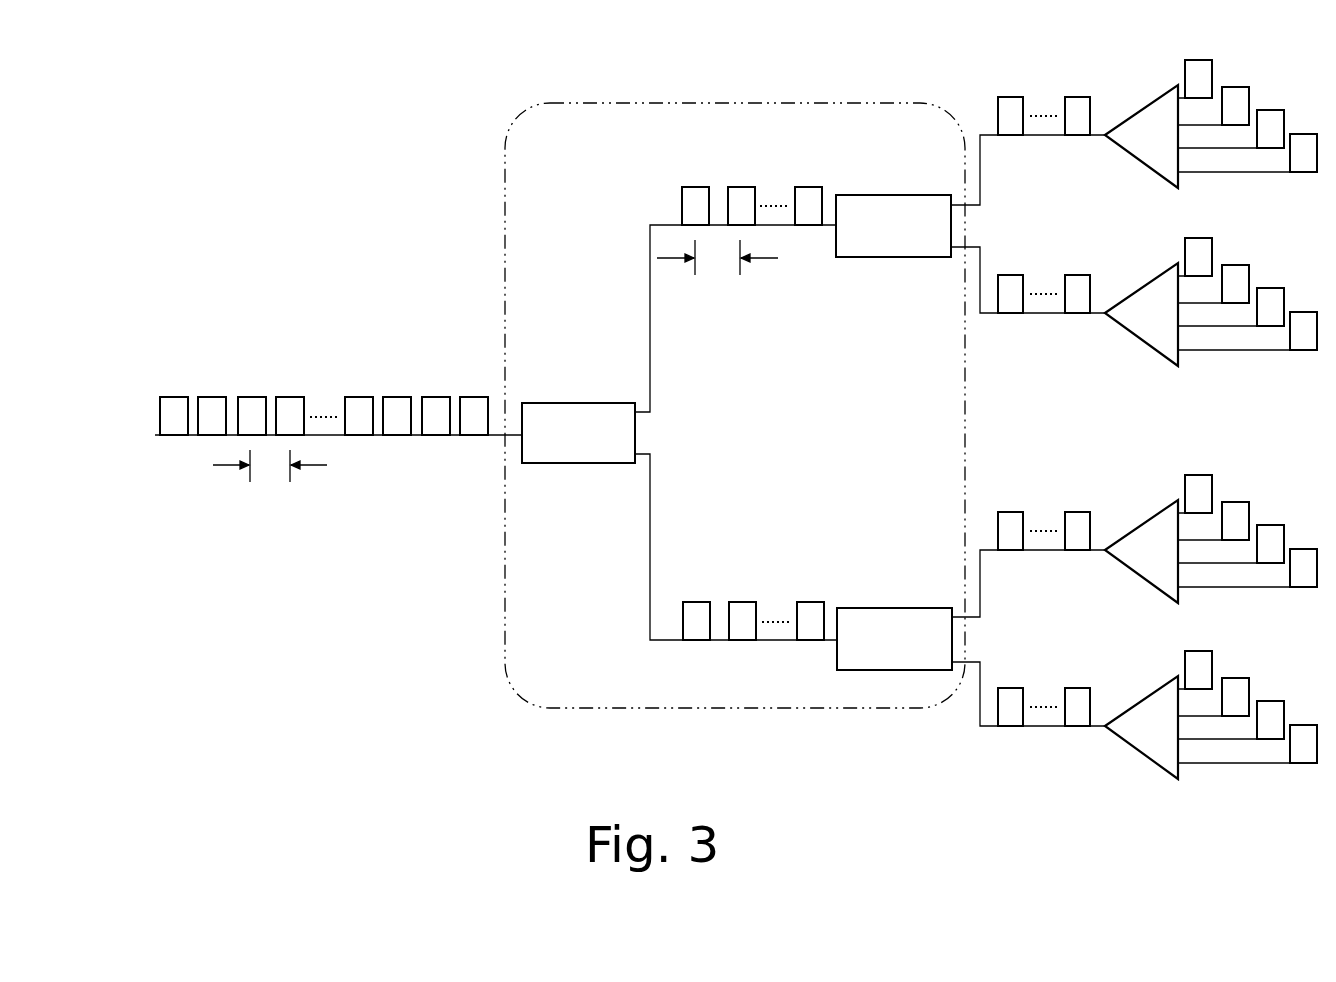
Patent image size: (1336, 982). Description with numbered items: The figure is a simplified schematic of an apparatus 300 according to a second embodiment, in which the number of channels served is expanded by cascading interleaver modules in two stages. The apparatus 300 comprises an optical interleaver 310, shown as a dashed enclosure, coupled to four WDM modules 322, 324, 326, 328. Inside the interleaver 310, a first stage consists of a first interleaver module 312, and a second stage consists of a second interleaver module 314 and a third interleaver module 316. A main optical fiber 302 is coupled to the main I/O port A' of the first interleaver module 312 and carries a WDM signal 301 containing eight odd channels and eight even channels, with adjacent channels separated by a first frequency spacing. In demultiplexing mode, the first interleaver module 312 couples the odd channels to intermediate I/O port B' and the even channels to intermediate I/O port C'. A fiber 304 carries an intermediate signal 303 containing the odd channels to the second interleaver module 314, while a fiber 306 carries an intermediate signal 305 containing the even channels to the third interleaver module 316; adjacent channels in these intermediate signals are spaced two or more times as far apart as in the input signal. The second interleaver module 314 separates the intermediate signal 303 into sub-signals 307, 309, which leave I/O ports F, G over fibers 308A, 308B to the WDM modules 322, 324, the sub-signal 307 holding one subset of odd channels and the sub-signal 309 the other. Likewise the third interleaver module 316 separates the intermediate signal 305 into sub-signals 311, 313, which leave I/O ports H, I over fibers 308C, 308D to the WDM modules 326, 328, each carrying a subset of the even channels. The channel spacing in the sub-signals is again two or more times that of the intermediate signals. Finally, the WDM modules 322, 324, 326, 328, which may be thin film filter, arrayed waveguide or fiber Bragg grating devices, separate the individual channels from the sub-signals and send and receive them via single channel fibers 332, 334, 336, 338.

The apparatus 300 is at (229, 80).
The WDM signal 301 is at (493, 378).
The main optical fiber 302 is at (335, 436).
The intermediate signal 303 is at (832, 178).
The fiber 304 is at (650, 306).
The intermediate signal 305 is at (835, 595).
The fiber 306 is at (775, 643).
The sub-signal 307 is at (1095, 90).
The fiber 308A is at (993, 133).
The fiber 308B is at (1052, 315).
The fiber 308C is at (993, 549).
The fiber 308D is at (980, 713).
The sub-signal 309 is at (1095, 268).
The optical interleaver 310 is at (505, 235).
The sub-signal 311 is at (1095, 505).
The first interleaver module 312 is at (605, 448).
The sub-signal 313 is at (1095, 681).
The second interleaver module 314 is at (912, 241).
The third interleaver module 316 is at (913, 653).
The WDM module 322 is at (1141, 136).
The WDM module 324 is at (1141, 314).
The WDM module 326 is at (1141, 551).
The WDM module 328 is at (1141, 727).
The single channel fibers 332 is at (1325, 130).
The single channel fibers 334 is at (1325, 308).
The single channel fibers 336 is at (1325, 545).
The single channel fibers 338 is at (1325, 721).